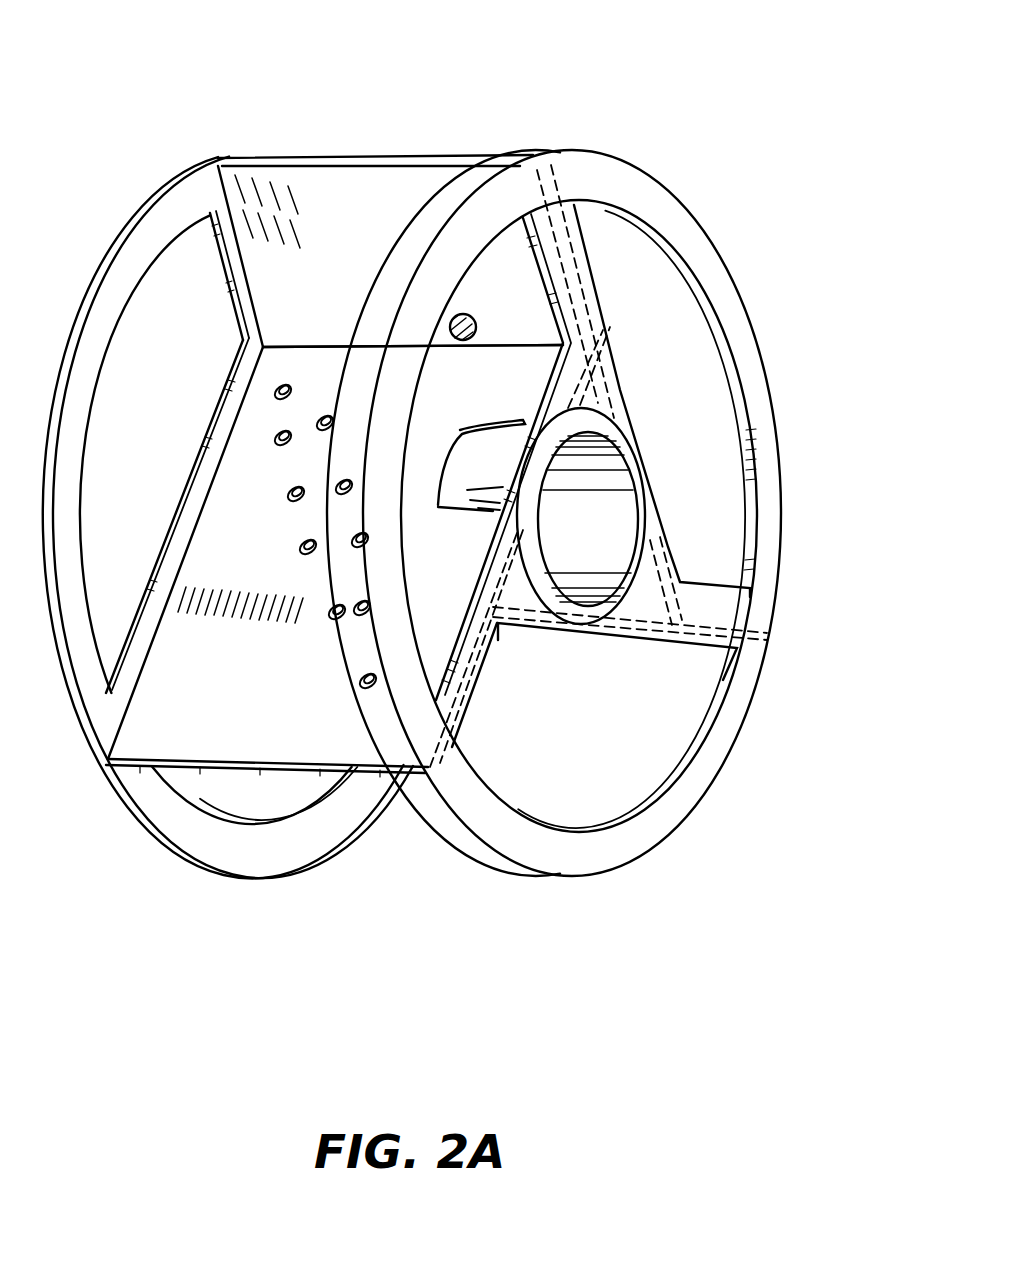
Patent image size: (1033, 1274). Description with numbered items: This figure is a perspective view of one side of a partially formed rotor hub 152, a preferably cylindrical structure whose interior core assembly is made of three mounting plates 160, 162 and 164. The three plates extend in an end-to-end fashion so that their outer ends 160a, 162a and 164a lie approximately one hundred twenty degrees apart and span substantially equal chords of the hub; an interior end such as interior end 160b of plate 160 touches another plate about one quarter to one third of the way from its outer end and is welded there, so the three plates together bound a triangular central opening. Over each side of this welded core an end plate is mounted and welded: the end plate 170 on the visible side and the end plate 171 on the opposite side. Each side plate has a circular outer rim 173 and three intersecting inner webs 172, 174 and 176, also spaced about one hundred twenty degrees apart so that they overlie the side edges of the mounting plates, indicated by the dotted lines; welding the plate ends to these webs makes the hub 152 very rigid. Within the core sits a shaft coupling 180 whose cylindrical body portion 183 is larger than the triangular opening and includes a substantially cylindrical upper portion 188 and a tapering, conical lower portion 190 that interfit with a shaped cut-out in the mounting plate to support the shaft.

The rotor hub 152 is at (676, 120).
The mounting plate 160 is at (276, 705).
The outer end of mounting plate 160a is at (280, 768).
The interior end of mounting plate 160b is at (268, 346).
The mounting plate 162 is at (366, 280).
The outer end of mounting plate 162a is at (400, 157).
The mounting plate 164 is at (680, 640).
The outer end of mounting plate 164a is at (767, 633).
The end plate 170 is at (778, 360).
The end plate 171 is at (176, 862).
The inner web 172 is at (187, 468).
The circular outer rim 173 is at (80, 565).
The inner web 174 is at (232, 312).
The inner web 176 is at (583, 634).
The shaft coupling 180 is at (622, 512).
The cylindrical body portion 183 is at (492, 420).
The cylindrical upper portion 188 is at (477, 501).
The conical lower portion 190 is at (465, 458).